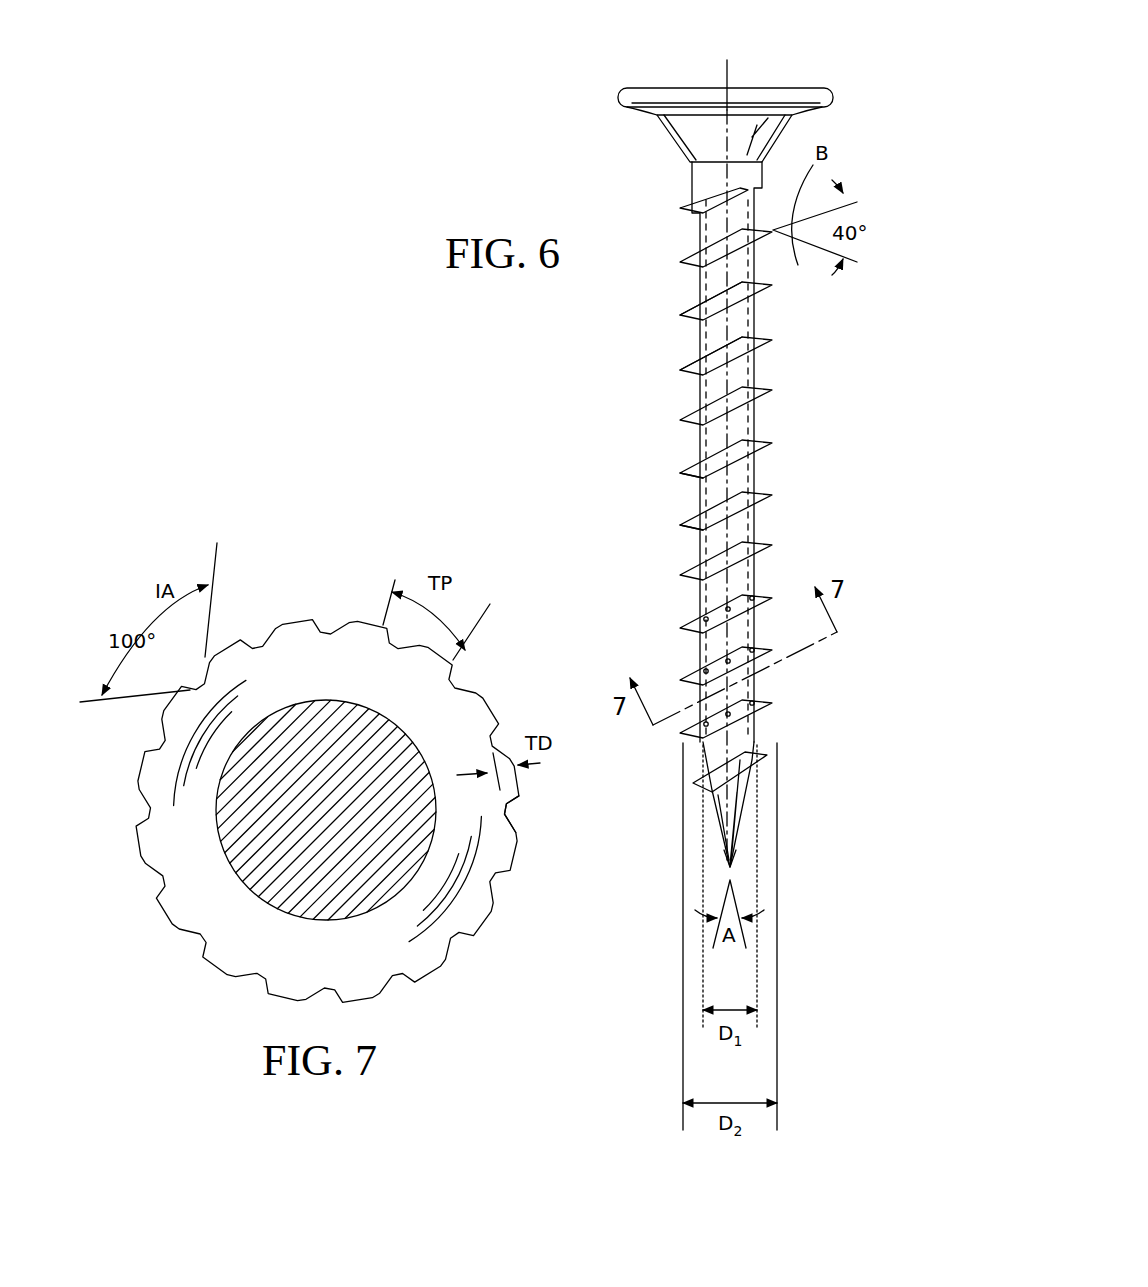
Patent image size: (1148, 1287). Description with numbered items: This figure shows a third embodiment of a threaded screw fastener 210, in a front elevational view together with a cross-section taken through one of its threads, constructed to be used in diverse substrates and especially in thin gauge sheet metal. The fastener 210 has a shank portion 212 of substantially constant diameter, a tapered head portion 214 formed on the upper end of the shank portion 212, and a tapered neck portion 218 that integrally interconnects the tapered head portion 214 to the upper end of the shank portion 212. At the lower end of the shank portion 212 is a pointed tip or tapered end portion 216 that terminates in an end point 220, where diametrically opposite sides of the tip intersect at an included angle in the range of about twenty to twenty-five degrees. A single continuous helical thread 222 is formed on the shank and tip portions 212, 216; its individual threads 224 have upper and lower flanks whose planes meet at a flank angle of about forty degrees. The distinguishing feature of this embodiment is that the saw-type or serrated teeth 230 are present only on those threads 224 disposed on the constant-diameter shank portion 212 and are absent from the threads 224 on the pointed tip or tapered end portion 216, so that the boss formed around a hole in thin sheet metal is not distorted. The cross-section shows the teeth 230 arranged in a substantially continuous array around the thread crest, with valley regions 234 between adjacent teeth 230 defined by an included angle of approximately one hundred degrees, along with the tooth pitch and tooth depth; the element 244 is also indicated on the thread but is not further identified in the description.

In FIG. 6, the threaded screw fastener 210 is at (828, 70).
In FIG. 6, the shank portion 212 is at (745, 368).
In FIG. 7, the shank portion 212 is at (350, 822).
In FIG. 6, the tapered head portion 214 is at (622, 94).
In FIG. 6, the pointed tip or tapered end portion 216 is at (752, 788).
In FIG. 6, the tapered neck portion 218 is at (668, 130).
In FIG. 6, the end point 220 is at (726, 865).
In FIG. 6, the single continuous helical thread 222 is at (755, 388).
In FIG. 6, the threads 224 is at (683, 473).
In FIG. 6, the saw-type or serrated teeth 230 is at (708, 620).
In FIG. 7, the saw-type or serrated teeth 230 is at (292, 624).
In FIG. 7, the valley regions 234 is at (520, 815).
In FIG. 6, the thread trailing surface 244 is at (720, 330).